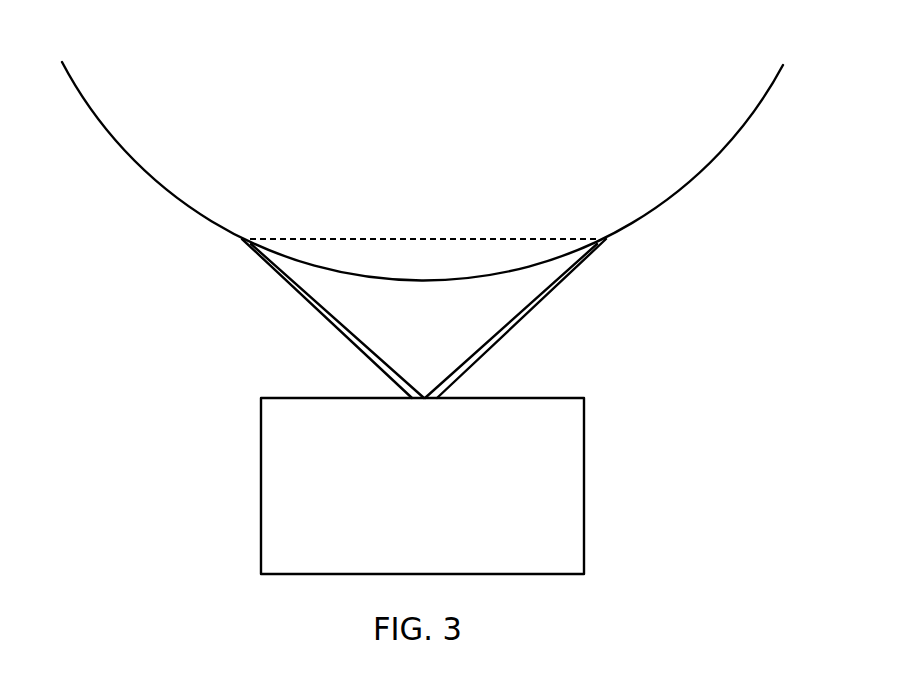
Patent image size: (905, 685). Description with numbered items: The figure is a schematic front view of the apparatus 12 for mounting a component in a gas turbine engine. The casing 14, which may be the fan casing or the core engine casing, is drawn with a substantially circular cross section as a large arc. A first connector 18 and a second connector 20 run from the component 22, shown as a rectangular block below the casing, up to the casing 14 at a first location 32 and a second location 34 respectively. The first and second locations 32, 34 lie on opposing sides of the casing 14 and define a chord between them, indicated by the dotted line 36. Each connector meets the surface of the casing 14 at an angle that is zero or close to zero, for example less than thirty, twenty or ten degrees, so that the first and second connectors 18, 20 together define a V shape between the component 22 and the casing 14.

The apparatus 12 is at (150, 345).
The casing 14 is at (422, 166).
The first connector 18 is at (307, 303).
The second connector 20 is at (552, 290).
The component 22 is at (438, 504).
The first location 32 is at (252, 237).
The second location 34 is at (590, 237).
The dotted line 36 is at (445, 237).